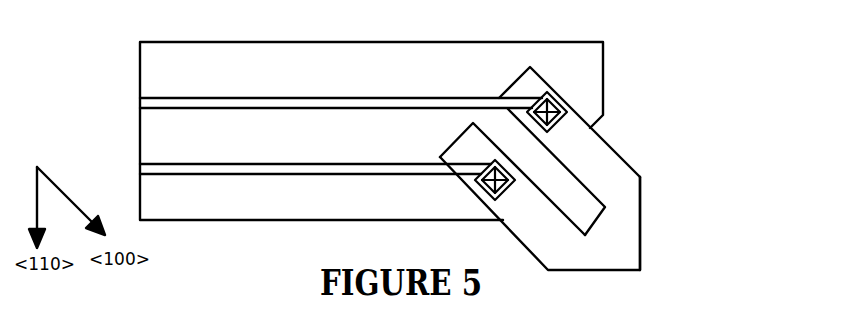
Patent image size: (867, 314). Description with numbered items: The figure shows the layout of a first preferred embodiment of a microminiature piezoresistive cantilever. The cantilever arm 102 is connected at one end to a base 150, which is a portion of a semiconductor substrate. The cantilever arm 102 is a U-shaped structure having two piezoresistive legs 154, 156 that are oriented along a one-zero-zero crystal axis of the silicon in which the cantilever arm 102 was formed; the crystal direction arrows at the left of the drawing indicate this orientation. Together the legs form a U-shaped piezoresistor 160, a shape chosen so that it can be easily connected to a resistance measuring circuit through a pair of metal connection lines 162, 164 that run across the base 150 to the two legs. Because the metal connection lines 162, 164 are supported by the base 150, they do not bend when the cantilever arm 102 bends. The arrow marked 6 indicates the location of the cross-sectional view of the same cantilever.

The base 150 is at (385, 42).
The metal connection line 162 is at (333, 97).
The metal connection line 164 is at (333, 163).
The piezoresistive leg 154 is at (547, 229).
The piezoresistive leg 156 is at (613, 185).
The U-shaped piezoresistor 160 is at (640, 258).
The cantilever arm 102 is at (665, 208).
The section line 6- 6 is at (612, 107).